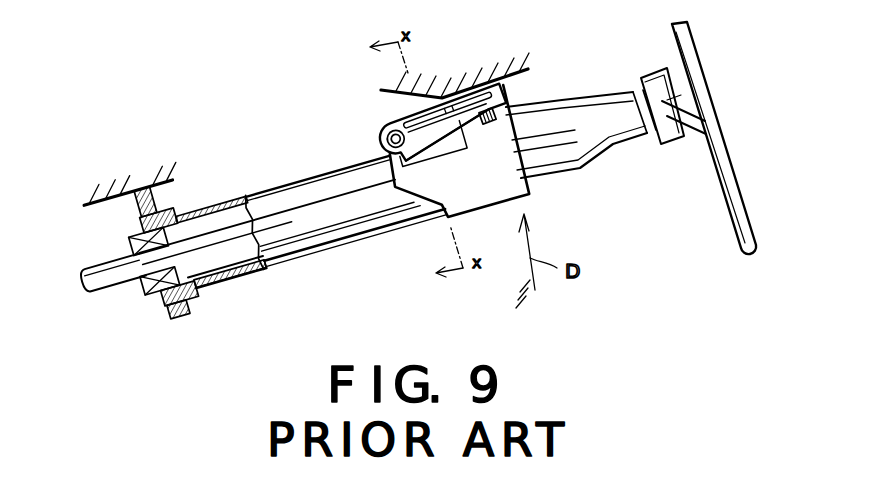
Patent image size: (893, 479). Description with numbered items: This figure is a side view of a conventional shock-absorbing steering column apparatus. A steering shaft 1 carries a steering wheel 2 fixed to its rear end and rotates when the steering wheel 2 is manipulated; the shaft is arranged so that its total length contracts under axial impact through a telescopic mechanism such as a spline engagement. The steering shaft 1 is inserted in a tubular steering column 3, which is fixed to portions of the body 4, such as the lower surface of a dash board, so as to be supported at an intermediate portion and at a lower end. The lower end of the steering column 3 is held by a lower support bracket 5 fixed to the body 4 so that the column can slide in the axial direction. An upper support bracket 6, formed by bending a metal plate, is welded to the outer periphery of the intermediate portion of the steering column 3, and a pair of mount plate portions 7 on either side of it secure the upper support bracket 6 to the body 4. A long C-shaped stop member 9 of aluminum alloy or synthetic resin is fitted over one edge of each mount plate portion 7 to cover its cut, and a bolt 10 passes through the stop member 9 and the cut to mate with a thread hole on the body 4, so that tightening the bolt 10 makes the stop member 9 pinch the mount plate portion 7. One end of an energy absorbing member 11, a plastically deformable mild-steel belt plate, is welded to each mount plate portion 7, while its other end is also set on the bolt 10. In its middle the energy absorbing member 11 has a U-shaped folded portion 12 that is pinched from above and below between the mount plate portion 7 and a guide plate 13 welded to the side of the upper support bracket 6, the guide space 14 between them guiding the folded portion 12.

The steering shaft 1 is at (217, 247).
The steering wheel 2 is at (703, 92).
The steering column 3 is at (327, 245).
The body 4 is at (127, 176).
The lower support bracket 5 is at (133, 207).
The upper support bracket 6 is at (473, 192).
The mount plate portion 7 is at (385, 135).
The stop member 9 is at (508, 86).
The bolt 10 is at (557, 176).
The energy absorbing member 11 is at (416, 99).
The folded portion 12 is at (388, 148).
The guide plate 13 is at (432, 165).
The guide space 14 is at (410, 137).